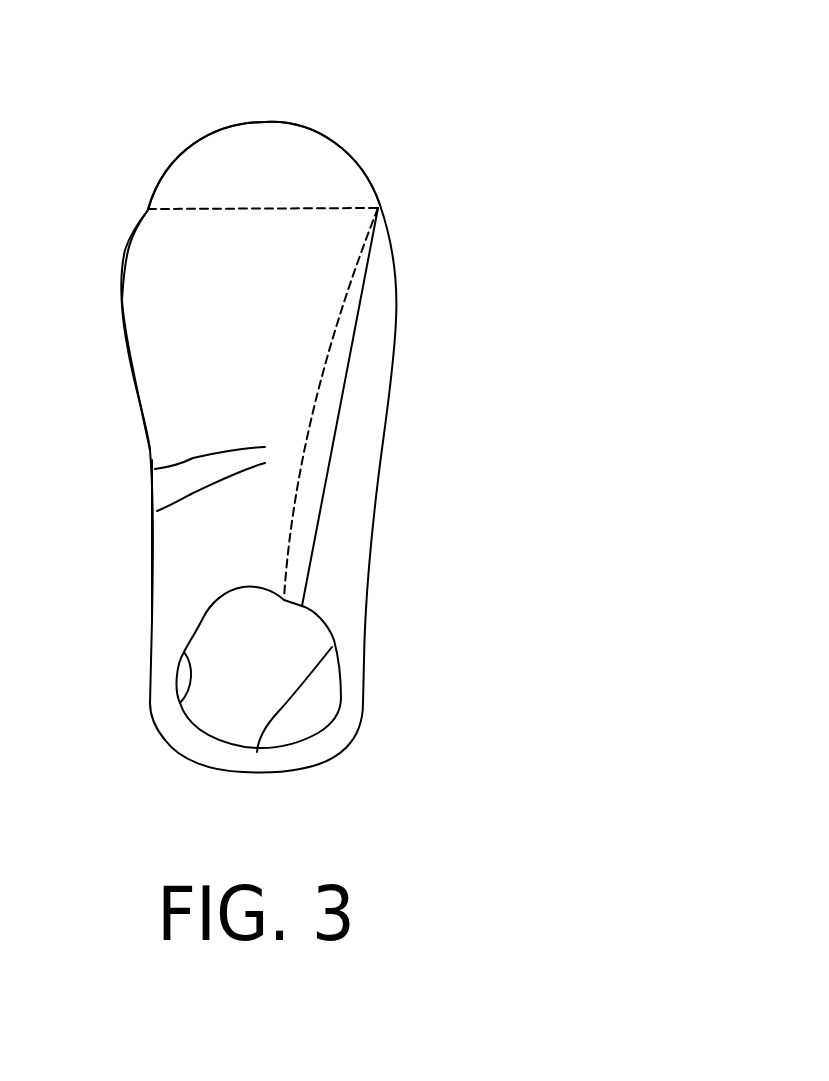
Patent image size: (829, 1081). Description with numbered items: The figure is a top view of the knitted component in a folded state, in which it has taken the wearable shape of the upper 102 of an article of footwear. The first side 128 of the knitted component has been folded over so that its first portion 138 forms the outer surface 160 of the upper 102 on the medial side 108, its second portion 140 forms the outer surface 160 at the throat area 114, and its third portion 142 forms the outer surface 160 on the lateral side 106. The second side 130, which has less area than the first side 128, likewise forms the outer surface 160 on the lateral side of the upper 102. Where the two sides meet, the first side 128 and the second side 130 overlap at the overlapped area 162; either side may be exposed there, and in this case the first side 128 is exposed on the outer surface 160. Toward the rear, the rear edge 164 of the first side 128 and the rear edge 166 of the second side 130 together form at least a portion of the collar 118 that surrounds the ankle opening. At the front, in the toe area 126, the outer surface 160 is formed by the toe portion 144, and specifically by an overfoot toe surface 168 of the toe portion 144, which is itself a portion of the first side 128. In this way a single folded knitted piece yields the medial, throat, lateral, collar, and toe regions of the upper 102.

The upper 102 is at (370, 98).
The lateral side 106 is at (360, 393).
The medial side 108 is at (127, 312).
The throat area 114 is at (155, 469).
The collar 118 is at (302, 738).
The toe area 126 is at (193, 170).
The first side 128 is at (205, 388).
The second side 130 is at (362, 598).
The first portion 138 is at (130, 278).
The second portion 140 is at (157, 511).
The third portion 142 is at (312, 502).
The toe portion 144 is at (290, 176).
The outer surface 160 is at (307, 287).
The overlapped area 162 is at (337, 353).
The rear edge 164 is at (180, 703).
The rear edge 166 is at (257, 752).
The overfoot toe surface 168 is at (348, 171).